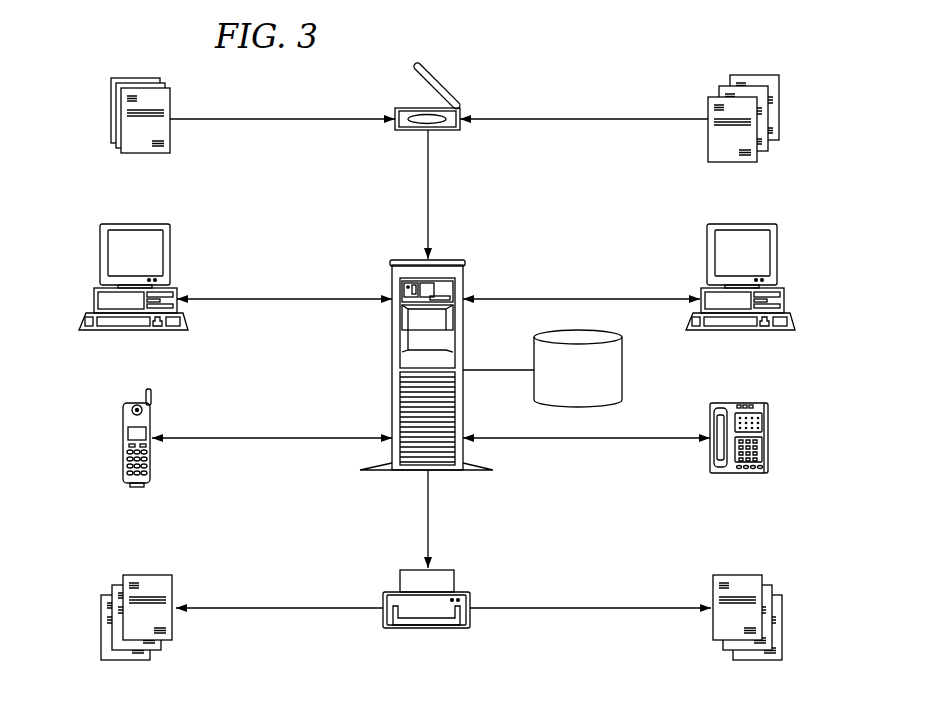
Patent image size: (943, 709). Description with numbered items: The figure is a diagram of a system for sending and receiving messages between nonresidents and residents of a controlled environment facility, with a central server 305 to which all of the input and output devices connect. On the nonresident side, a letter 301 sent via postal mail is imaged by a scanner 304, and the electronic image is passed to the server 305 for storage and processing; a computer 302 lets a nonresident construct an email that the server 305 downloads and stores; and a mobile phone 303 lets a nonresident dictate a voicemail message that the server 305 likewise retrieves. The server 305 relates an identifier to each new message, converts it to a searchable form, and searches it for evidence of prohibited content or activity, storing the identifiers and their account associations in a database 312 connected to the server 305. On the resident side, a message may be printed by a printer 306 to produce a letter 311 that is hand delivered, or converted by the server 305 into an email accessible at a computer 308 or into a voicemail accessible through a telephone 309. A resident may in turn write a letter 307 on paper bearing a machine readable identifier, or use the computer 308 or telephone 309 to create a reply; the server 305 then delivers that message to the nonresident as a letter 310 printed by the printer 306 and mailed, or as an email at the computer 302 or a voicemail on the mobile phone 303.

The letter 301 is at (110, 105).
The computer 302 is at (100, 250).
The mobile phone 303 is at (122, 445).
The scanner 304 is at (438, 81).
The server 305 is at (392, 383).
The printer 306 is at (417, 630).
The letter 307 is at (780, 103).
The computer 308 is at (778, 252).
The telephone 309 is at (768, 443).
The letter 310 is at (102, 633).
The letter 311 is at (783, 633).
The database 312 is at (622, 372).